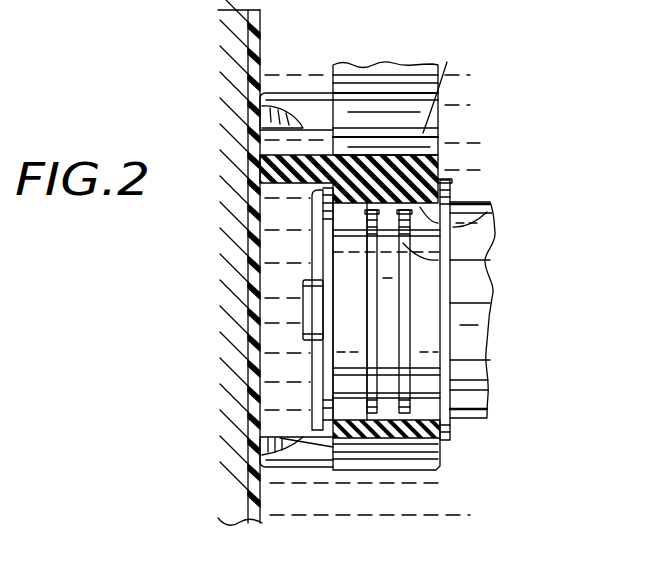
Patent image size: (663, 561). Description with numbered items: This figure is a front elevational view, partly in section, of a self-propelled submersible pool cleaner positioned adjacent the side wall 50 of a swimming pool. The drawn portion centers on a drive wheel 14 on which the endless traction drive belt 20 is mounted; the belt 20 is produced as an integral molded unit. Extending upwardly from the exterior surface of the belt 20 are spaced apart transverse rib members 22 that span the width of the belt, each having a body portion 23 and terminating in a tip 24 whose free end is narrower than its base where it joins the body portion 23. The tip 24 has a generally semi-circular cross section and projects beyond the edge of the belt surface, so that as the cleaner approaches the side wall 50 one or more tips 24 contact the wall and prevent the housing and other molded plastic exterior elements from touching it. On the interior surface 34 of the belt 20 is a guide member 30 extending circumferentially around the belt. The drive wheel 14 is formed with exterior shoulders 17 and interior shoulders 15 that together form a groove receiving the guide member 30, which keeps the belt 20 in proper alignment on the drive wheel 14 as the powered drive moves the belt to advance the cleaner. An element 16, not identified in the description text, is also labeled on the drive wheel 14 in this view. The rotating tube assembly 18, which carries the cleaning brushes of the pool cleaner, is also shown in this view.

The drive wheel 14 is at (345, 310).
The interior shoulders 15 is at (440, 358).
The collar 16 is at (302, 294).
The exterior shoulders 17 is at (300, 235).
The rotating tube assembly 18 is at (475, 202).
The drive belt 20 is at (447, 148).
The transverse rib member 22 is at (427, 97).
The body portion 23 is at (445, 479).
The tip 24 is at (262, 128).
The guide member 30 is at (487, 261).
The interior surface 34 is at (488, 206).
The side wall 50 is at (250, 178).